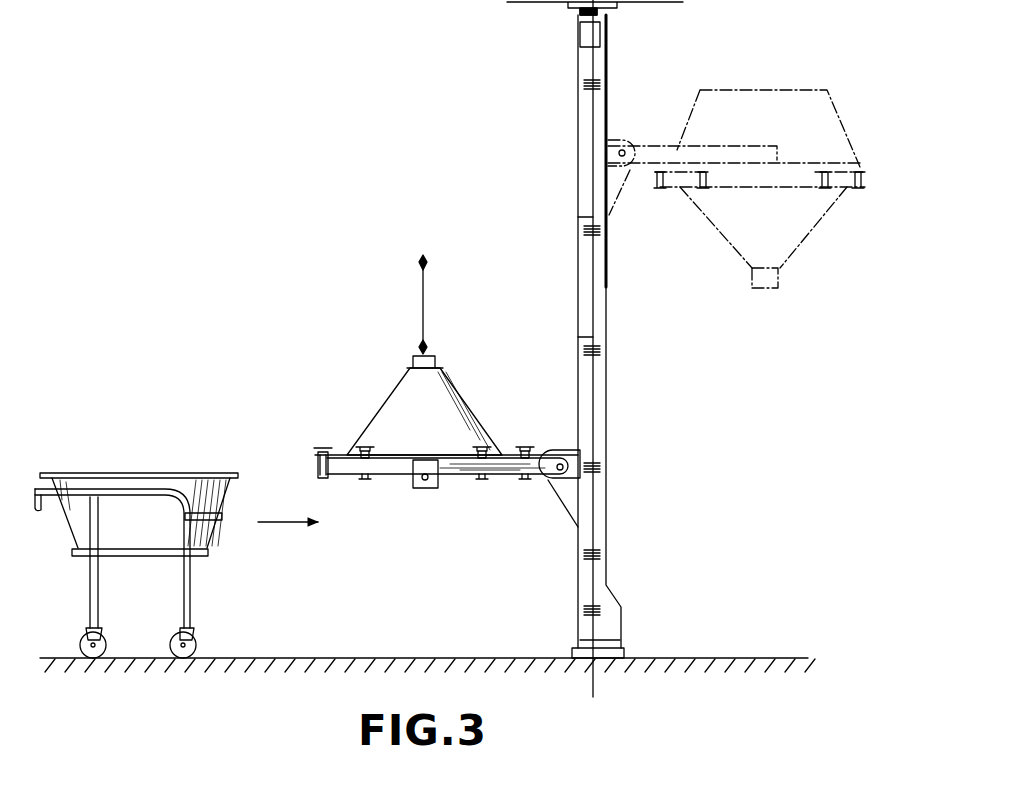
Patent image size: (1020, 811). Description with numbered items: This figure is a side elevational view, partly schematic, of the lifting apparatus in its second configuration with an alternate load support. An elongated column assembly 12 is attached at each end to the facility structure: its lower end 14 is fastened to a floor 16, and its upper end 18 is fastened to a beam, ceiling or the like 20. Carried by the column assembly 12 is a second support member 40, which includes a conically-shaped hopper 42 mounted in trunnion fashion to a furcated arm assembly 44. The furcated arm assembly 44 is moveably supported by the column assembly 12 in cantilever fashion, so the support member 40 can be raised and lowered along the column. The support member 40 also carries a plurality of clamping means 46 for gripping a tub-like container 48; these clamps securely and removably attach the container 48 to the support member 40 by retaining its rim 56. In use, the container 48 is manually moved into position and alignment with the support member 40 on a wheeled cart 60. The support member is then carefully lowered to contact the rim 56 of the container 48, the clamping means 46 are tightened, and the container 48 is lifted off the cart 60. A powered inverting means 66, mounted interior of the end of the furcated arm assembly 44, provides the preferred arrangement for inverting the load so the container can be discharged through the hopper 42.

The column assembly 12 is at (609, 418).
The lower end 14 is at (630, 633).
The floor 16 is at (763, 657).
The upper end 18 is at (611, 33).
The beam, ceiling or the like 20 is at (540, 4).
The second support member 40 is at (454, 501).
The conically-shaped hopper 42 is at (805, 268).
The furcated arm assembly 44 is at (515, 477).
The clamping means 46 is at (318, 450).
The tub-like container 48 is at (178, 472).
The rim 56 is at (36, 470).
The wheeled cart 60 is at (190, 588).
The powered inverting means 66 is at (418, 489).